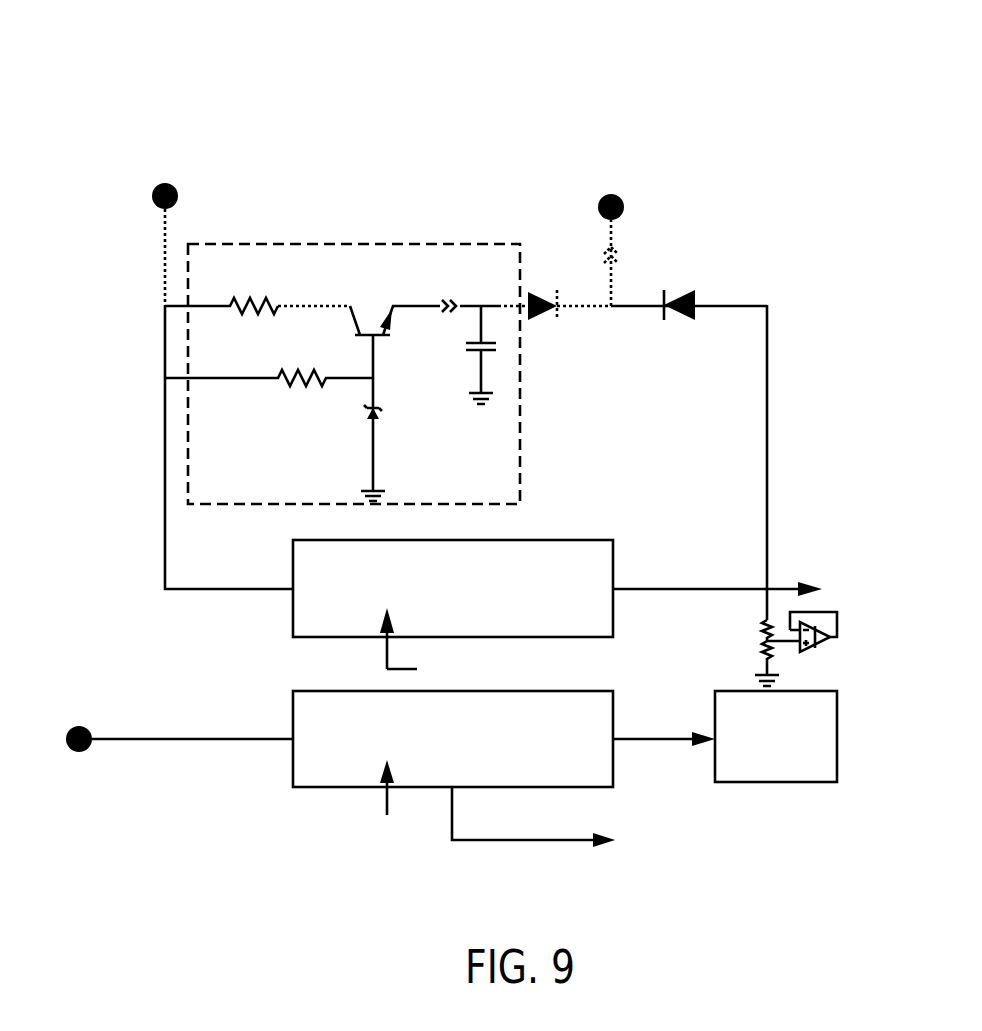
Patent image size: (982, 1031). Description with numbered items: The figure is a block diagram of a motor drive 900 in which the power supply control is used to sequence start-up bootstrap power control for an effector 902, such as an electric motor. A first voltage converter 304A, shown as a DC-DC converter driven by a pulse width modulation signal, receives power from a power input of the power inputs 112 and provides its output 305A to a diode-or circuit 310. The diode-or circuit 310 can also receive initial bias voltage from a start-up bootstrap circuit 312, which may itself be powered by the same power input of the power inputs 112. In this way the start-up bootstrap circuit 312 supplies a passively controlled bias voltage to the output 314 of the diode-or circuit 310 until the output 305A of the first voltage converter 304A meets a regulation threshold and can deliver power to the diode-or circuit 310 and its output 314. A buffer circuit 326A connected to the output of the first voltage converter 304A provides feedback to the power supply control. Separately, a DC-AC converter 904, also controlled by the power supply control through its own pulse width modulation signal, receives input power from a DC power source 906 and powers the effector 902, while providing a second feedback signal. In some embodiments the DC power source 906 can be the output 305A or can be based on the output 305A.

The motor drive 900 is at (207, 90).
The power inputs 112 is at (167, 183).
The start-up bootstrap circuit 312 is at (352, 242).
The output of the diode-or circuit 314 is at (613, 195).
The diode-or circuit 310 is at (664, 243).
The output of the first voltage converter 305A is at (768, 372).
The first voltage converter 304A is at (556, 540).
The buffer circuit 326A is at (835, 612).
The DC-AC converter 904 is at (613, 700).
The effector 902 is at (838, 736).
The DC power source 906 is at (82, 725).